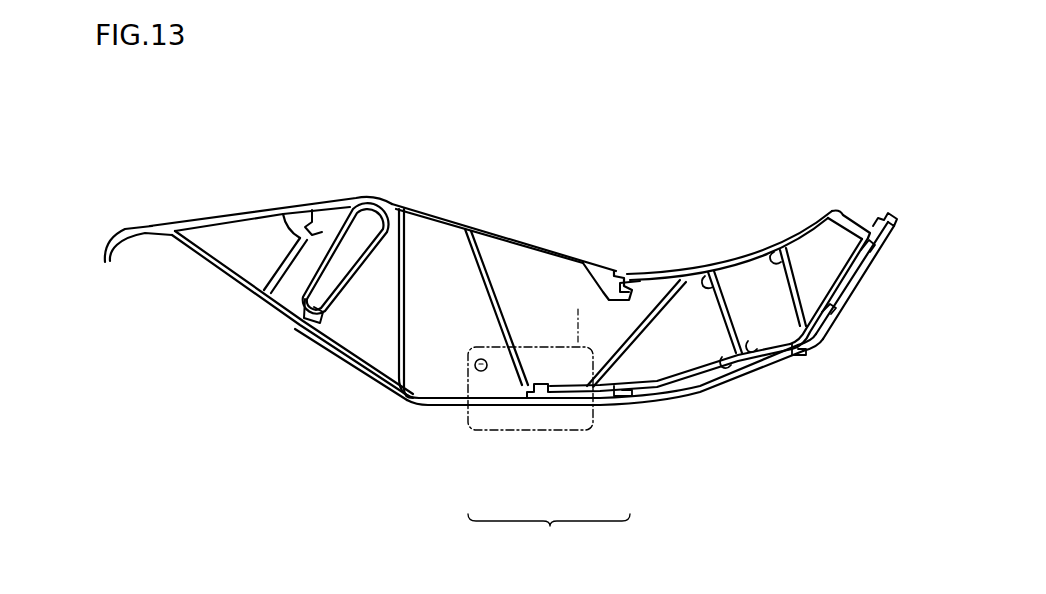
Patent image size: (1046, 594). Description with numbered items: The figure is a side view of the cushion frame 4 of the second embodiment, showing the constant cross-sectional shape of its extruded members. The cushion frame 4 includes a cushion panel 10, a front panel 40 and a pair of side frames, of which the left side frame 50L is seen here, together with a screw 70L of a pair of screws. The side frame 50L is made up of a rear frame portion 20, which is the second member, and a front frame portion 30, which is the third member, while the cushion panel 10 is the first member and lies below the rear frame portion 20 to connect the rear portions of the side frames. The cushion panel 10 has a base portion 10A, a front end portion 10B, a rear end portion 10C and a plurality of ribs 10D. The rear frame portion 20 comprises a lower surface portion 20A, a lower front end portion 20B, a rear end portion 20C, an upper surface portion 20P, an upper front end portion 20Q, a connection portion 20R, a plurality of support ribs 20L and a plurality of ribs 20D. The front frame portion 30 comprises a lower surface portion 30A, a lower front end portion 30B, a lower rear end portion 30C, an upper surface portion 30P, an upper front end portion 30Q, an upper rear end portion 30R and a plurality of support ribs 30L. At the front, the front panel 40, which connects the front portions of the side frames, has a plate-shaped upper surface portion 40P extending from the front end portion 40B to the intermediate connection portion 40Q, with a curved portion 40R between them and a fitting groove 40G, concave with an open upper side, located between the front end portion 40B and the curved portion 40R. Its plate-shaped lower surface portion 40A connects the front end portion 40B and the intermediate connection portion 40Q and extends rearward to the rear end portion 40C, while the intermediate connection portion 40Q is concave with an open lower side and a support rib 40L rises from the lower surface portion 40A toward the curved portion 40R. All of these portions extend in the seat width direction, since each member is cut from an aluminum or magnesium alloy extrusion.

The cushion frame 4 is at (207, 116).
The cushion panel 10 is at (741, 390).
The base portion 10A is at (689, 398).
The front end portion 10B is at (526, 398).
The rear end portion 10C is at (895, 229).
The ribs 10D is at (814, 344).
The rear frame portion 20 is at (625, 411).
The lower surface portion 20A is at (657, 385).
The lower front end portion 20B is at (538, 397).
The rear end portion 20C is at (879, 226).
The ribs 20D is at (791, 349).
The support ribs 20L is at (634, 330).
The upper surface portion 20P is at (733, 262).
The upper front end portion 20Q is at (631, 278).
The connection portion 20R is at (865, 230).
The front frame portion 30 is at (489, 410).
The lower surface portion 30A is at (453, 399).
The lower front end portion 30B is at (313, 327).
The lower rear end portion 30C is at (526, 382).
The support ribs 30L is at (404, 315).
The upper surface portion 30P is at (497, 234).
The upper front end portion 30Q is at (282, 222).
The upper rear end portion 30R is at (609, 274).
The front panel 40 is at (190, 260).
The lower surface portion 40A is at (348, 347).
The front end portion 40B is at (104, 240).
The rear end portion 40C is at (415, 395).
The fitting groove 40G is at (315, 226).
The support rib 40L is at (286, 260).
The upper surface portion 40P is at (216, 215).
The intermediate connection portion 40Q is at (309, 305).
The curved portion 40R is at (388, 218).
The side frame 50L is at (549, 531).
The screw 70L is at (519, 381).